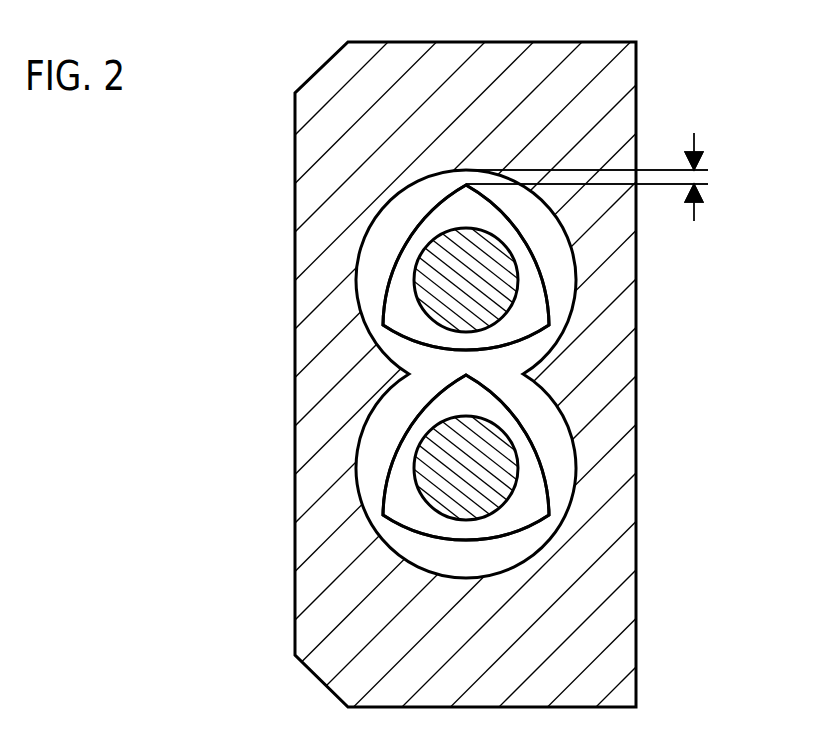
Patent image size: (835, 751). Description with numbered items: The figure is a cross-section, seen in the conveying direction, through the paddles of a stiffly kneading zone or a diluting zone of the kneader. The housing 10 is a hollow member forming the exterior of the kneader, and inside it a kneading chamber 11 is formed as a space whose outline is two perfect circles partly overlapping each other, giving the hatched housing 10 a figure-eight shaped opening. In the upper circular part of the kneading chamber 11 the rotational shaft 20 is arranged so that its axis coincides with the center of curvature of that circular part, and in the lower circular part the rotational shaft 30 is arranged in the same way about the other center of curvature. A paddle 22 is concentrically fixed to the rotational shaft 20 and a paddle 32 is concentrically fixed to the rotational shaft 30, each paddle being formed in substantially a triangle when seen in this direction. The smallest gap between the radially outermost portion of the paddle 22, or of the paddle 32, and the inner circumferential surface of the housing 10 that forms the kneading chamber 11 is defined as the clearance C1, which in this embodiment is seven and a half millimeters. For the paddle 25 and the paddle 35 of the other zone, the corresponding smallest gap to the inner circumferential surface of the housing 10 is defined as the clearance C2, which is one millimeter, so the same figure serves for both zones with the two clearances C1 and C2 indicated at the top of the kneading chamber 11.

The housing 10 is at (625, 406).
The kneading chamber 11 is at (503, 365).
The rotational shaft 20 is at (428, 263).
The paddle 22 is at (397, 304).
The paddle 25 is at (397, 304).
The rotational shaft 30 is at (428, 453).
The paddle 32 is at (397, 494).
The paddle 35 is at (397, 494).
The clearance C1 is at (627, 177).
The clearance C2 is at (627, 177).